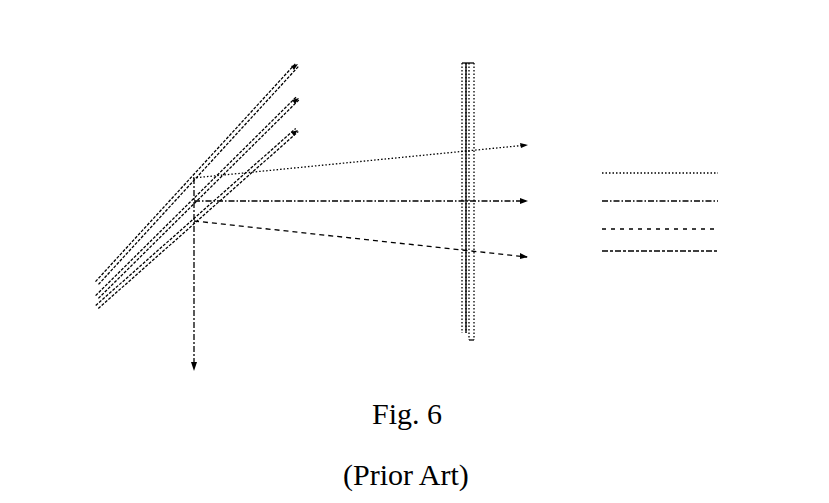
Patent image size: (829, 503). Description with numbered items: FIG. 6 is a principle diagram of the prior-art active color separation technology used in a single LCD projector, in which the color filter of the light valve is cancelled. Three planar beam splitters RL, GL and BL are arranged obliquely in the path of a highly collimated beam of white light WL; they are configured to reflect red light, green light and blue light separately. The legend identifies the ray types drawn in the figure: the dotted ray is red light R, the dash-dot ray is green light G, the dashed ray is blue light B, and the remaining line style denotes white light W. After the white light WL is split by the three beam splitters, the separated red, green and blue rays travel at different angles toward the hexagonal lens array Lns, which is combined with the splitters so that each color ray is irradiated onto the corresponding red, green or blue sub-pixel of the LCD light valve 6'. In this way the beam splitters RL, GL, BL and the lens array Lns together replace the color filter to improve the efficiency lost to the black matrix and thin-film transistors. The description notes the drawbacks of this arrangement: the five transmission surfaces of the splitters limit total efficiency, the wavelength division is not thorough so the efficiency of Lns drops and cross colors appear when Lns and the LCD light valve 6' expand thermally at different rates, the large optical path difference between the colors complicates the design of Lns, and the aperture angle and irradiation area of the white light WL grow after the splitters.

The planar beam splitter for blue light BL is at (297, 65).
The planar beam splitter for red light RL is at (298, 100).
The planar beam splitter for green light GL is at (297, 130).
The white light WL is at (218, 274).
The hexagonal lens array Lns is at (462, 331).
The LCD light valve 6' is at (496, 216).
The red light R is at (464, 164).
The green light G is at (465, 202).
The blue light B is at (464, 239).
The white light W is at (671, 253).